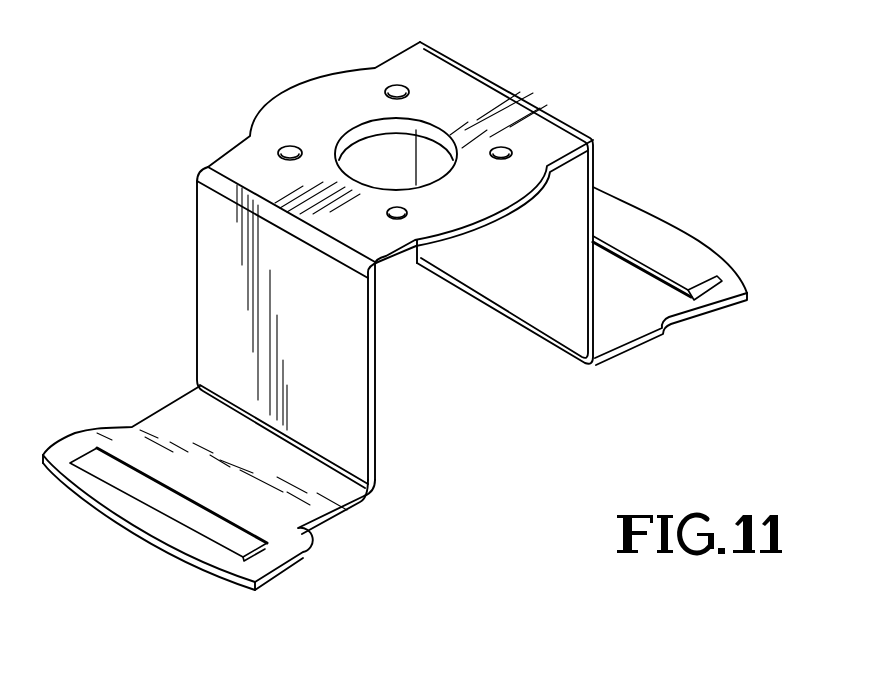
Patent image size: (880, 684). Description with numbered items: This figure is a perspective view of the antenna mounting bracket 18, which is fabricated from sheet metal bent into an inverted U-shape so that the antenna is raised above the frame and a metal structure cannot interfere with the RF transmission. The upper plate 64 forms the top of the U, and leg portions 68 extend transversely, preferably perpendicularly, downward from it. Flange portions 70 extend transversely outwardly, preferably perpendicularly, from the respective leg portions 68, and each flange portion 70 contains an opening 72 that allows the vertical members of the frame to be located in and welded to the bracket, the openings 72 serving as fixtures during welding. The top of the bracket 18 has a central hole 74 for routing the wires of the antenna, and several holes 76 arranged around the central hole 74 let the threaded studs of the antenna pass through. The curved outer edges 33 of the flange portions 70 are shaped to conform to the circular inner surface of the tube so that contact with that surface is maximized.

The antenna mounting bracket 18 is at (626, 124).
The top plate 64 is at (473, 100).
The central hole 74 is at (385, 163).
The holes 76 is at (388, 87).
The leg portions 68 is at (227, 338).
The flange portions 70 is at (690, 259).
The openings 72 is at (667, 289).
The outer edges 33 is at (650, 207).